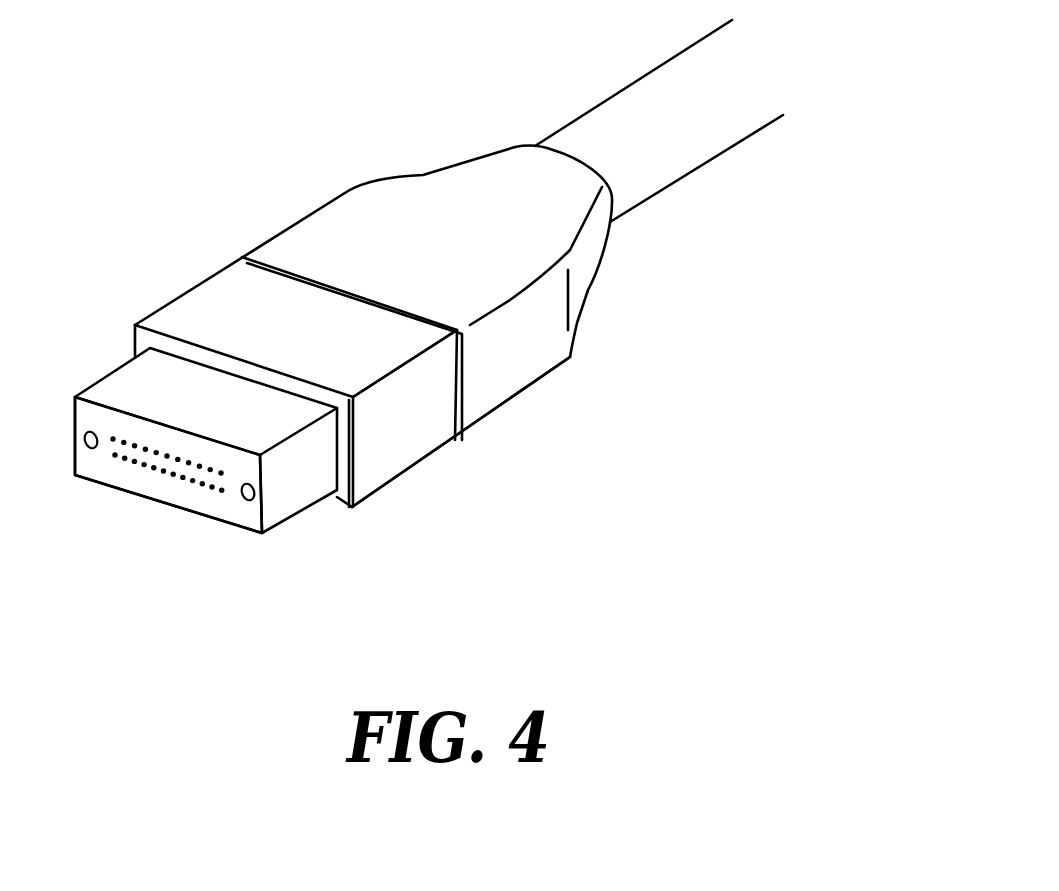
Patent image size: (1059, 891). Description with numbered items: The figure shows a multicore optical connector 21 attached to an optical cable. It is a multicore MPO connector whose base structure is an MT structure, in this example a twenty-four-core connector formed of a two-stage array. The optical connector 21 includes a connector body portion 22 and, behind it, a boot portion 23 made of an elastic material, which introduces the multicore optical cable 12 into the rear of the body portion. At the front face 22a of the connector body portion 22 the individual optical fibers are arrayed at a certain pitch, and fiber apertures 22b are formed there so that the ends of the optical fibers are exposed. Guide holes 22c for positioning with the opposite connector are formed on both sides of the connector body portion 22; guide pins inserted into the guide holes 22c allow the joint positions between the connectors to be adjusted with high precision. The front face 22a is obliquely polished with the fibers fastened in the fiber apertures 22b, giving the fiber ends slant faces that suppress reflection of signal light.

The multicore optical cable 12 is at (703, 138).
The optical connector 21 is at (358, 176).
The connector body portion 22 is at (308, 470).
The front face 22a is at (180, 498).
The fiber apertures 22b is at (142, 448).
The guide holes 22c is at (93, 448).
The boot portion 23 is at (538, 342).